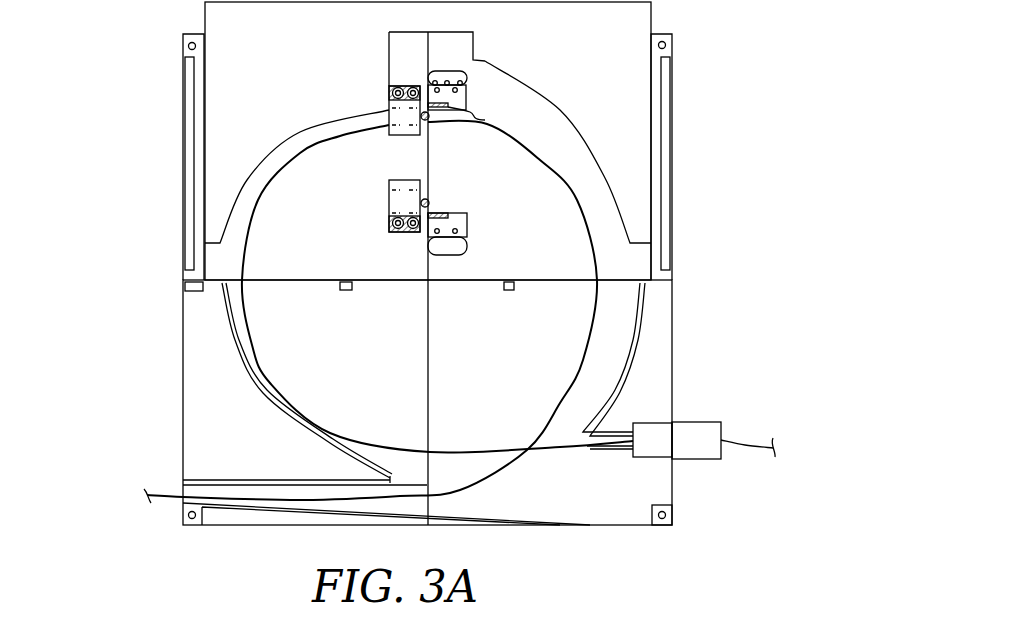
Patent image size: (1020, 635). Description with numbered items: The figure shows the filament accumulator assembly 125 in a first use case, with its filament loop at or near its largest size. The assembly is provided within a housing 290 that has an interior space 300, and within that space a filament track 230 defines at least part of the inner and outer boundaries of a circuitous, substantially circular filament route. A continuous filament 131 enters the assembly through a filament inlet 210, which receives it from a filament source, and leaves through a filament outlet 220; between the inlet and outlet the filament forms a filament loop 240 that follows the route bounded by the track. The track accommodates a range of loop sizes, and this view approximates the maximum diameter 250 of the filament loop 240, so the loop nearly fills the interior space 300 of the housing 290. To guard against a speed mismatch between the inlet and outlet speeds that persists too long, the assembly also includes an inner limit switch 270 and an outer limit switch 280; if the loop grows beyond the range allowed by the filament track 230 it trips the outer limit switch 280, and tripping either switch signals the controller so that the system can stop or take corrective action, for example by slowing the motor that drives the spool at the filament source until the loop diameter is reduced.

The filament accumulator assembly 125 is at (128, 54).
The continuous filament 131 is at (160, 490).
The filament inlet 210 is at (703, 421).
The filament outlet 220 is at (183, 497).
The filament track 230 is at (607, 178).
The filament loop 240 is at (242, 302).
The maximum diameter 250 is at (253, 213).
The inner limit switch 270 is at (457, 207).
The outer limit switch 280 is at (463, 110).
The housing 290 is at (183, 368).
The interior space 300 is at (273, 393).